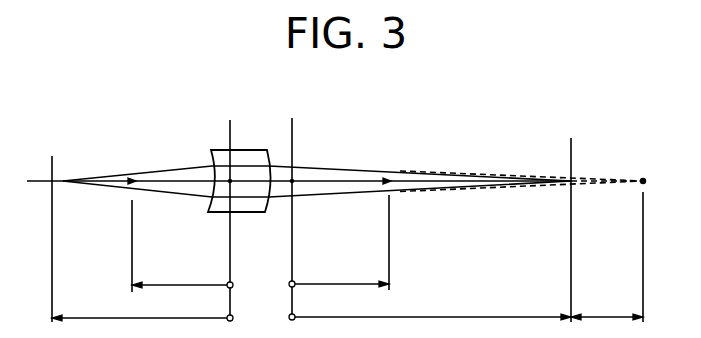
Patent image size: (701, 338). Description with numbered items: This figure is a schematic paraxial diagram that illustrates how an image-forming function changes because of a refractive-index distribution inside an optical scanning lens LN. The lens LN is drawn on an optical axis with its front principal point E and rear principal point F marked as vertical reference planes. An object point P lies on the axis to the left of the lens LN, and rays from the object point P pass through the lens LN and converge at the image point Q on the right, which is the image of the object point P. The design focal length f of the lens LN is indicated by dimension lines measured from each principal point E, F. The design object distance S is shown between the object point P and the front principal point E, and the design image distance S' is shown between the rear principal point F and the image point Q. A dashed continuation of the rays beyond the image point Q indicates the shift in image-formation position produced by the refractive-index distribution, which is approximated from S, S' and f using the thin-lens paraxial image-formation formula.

The object point P is at (53, 223).
The front principal point E is at (230, 132).
The lens LN is at (247, 150).
The rear principal point F is at (292, 138).
The image point Q is at (571, 212).
The design focal length f is at (260, 243).
The design object distance S is at (142, 307).
The design image distance S' is at (430, 307).